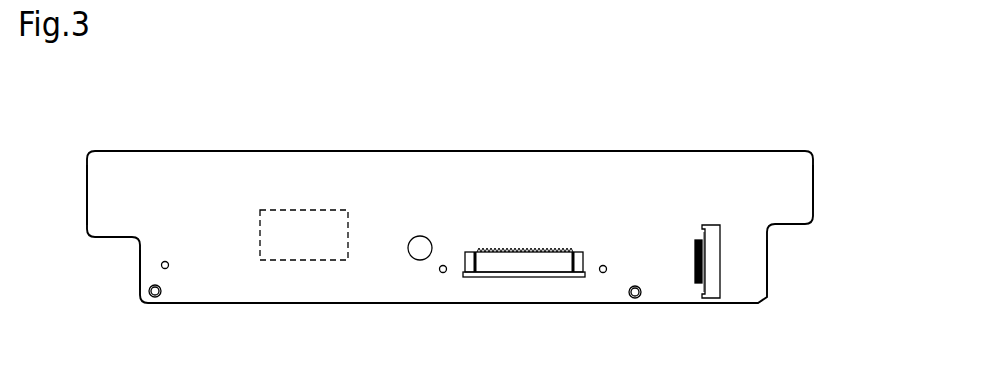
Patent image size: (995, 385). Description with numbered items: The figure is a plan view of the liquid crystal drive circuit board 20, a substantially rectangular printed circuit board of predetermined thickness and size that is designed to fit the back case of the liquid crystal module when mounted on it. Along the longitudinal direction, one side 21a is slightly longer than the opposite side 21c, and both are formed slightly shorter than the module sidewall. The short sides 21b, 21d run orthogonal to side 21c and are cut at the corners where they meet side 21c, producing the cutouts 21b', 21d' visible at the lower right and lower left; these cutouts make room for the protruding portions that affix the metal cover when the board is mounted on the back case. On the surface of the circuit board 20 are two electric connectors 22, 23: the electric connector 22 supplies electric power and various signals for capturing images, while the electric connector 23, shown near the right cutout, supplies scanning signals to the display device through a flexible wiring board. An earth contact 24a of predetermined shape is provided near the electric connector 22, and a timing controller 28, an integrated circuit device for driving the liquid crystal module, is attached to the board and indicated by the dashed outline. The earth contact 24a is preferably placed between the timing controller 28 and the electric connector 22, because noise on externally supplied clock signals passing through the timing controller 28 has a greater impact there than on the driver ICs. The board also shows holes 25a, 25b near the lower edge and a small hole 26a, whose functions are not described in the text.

The liquid crystal drive circuit board 20 is at (543, 120).
The side 21a is at (295, 150).
The short side 21b is at (842, 187).
The cutout 21b' is at (801, 264).
The side 21c is at (453, 305).
The short side 21d is at (58, 201).
The cutout 21d' is at (103, 268).
The electric connector 22 is at (525, 260).
The electric connector 23 is at (713, 292).
The earth contact 24a is at (422, 243).
The mounting hole 25a is at (155, 297).
The mounting hole 25b is at (635, 298).
The hole 26a is at (166, 262).
The timing controller 28 is at (305, 237).